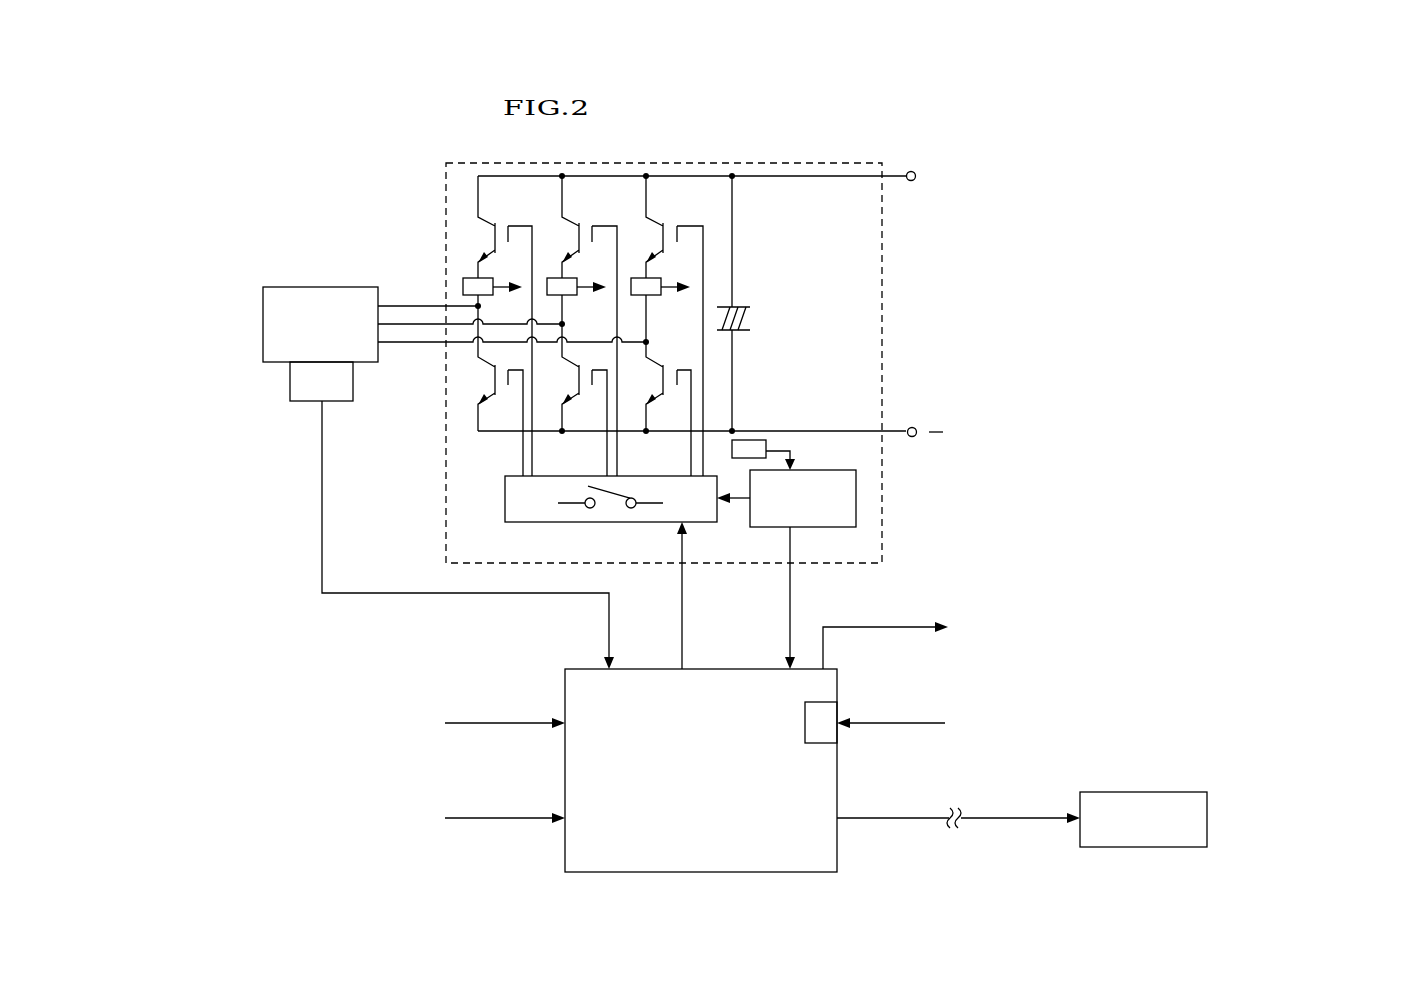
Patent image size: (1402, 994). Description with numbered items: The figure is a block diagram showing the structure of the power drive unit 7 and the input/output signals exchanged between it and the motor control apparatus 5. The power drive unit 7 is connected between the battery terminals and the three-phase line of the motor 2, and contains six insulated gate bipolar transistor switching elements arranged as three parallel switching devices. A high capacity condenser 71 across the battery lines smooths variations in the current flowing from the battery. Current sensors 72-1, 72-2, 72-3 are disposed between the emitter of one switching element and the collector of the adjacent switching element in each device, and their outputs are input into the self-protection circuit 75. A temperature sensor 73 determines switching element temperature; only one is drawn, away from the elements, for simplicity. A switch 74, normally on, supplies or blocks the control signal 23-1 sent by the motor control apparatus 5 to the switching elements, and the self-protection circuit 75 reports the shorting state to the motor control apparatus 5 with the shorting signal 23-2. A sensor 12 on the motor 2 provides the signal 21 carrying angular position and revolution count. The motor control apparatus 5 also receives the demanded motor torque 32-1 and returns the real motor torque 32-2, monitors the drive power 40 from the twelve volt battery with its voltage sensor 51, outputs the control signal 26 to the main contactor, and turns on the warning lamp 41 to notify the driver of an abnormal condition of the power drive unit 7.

The motor 2 is at (305, 287).
The sensor 12 is at (290, 382).
The signal 21 is at (333, 593).
The power drive unit 7 is at (685, 163).
The current sensor 72-1 is at (463, 285).
The current sensor 72-2 is at (550, 268).
The current sensor 72-3 is at (635, 268).
The condenser 71 is at (745, 332).
The temperature sensor 73 is at (762, 440).
The switch 74 is at (533, 522).
The self-protection circuit 75 is at (856, 500).
The control signal 23-1 is at (682, 598).
The shorting signal 23-2 is at (792, 583).
The control signal 26 is at (1100, 644).
The motor control apparatus 5 is at (837, 853).
The voltage sensor 51 is at (833, 712).
The drive power 40 is at (883, 724).
The warning lamp 41 is at (1165, 792).
The demanded motor torque 32-1 is at (473, 723).
The real motor torque signal 32-2 is at (473, 818).